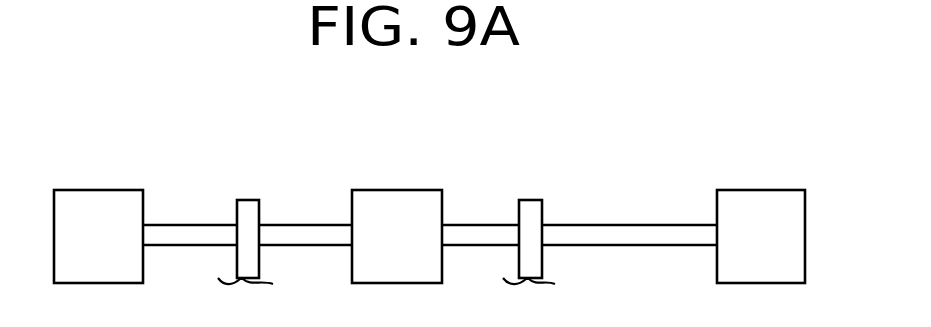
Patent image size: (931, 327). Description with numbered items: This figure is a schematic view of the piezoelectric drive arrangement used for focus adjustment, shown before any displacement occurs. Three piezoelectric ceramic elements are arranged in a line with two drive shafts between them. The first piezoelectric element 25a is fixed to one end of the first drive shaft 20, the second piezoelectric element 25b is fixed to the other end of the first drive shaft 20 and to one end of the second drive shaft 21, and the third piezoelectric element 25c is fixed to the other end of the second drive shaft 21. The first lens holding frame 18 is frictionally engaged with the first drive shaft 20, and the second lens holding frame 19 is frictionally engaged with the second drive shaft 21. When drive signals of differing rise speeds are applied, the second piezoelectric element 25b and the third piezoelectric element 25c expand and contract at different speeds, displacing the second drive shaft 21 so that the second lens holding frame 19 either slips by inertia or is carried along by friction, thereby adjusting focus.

The first piezoelectric element 25a is at (95, 213).
The first drive shaft 20 is at (197, 235).
The first lens holding frame 18 is at (248, 208).
The second piezoelectric element 25b is at (395, 215).
The second lens holding frame 19 is at (530, 208).
The second drive shaft 21 is at (630, 235).
The third piezoelectric element 25c is at (758, 215).